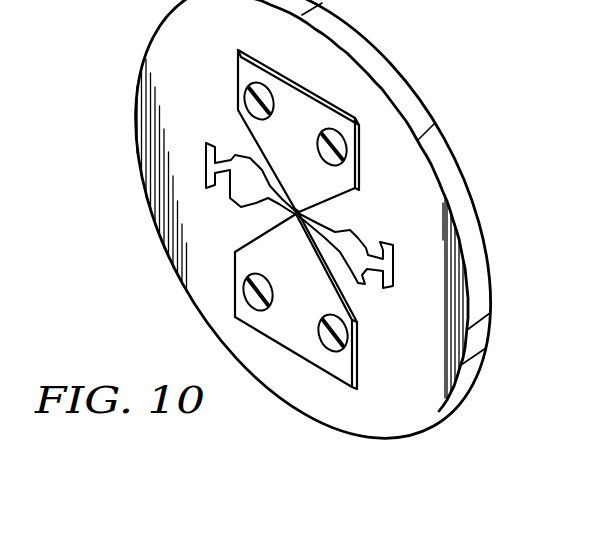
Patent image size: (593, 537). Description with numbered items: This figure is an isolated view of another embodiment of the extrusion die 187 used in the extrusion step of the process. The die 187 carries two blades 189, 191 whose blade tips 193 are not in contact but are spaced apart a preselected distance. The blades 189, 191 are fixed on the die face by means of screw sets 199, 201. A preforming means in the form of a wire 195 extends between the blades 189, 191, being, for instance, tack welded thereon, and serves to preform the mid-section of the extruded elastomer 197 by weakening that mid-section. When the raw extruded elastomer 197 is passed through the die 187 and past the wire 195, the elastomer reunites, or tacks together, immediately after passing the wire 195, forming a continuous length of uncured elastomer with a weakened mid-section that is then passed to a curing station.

The die 187 is at (426, 119).
The blade 189 is at (358, 172).
The blade 191 is at (358, 371).
The blade tips 193 is at (289, 210).
The wire 195 is at (303, 213).
The extruded elastomer 197 is at (357, 284).
The screw set 199 is at (245, 101).
The screw set 201 is at (331, 350).